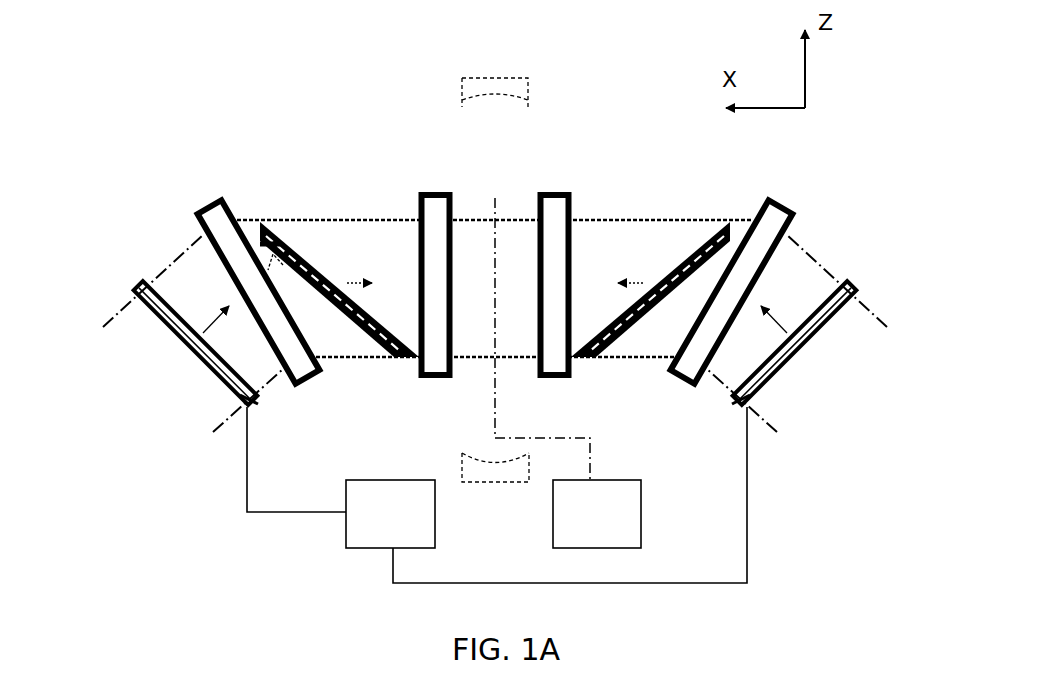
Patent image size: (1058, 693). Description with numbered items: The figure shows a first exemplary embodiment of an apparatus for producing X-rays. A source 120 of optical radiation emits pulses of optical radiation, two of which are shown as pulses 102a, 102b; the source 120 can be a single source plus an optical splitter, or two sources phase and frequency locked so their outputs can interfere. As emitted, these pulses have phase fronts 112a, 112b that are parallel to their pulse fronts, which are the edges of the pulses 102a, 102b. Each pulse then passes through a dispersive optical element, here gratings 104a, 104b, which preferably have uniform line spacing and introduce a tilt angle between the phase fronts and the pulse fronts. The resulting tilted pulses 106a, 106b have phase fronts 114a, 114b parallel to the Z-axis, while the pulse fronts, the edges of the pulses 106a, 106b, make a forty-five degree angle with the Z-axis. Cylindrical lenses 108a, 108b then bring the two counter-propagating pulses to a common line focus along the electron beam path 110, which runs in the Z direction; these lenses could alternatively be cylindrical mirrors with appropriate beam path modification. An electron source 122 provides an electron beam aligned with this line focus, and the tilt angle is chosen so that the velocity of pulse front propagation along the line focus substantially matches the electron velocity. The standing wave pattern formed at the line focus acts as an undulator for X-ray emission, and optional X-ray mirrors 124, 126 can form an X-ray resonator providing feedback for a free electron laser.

The pulse of optical radiation 102a is at (140, 283).
The pulse of optical radiation 102b is at (850, 285).
The grating 104a is at (218, 197).
The grating 104b is at (778, 198).
The pulse 106a is at (305, 250).
The pulse 106b is at (667, 263).
The cylindrical lens 108a is at (430, 192).
The cylindrical lens 108b is at (548, 192).
The electron beam path 110 is at (497, 210).
The phase front 112a is at (250, 393).
The phase front 112b is at (742, 403).
The phase front 114a is at (377, 333).
The phase front 114b is at (610, 343).
The source of optical radiation 120 is at (497, 495).
The electron source 122 is at (597, 514).
The X-ray mirror 124 is at (498, 472).
The X-ray mirror 126 is at (493, 87).